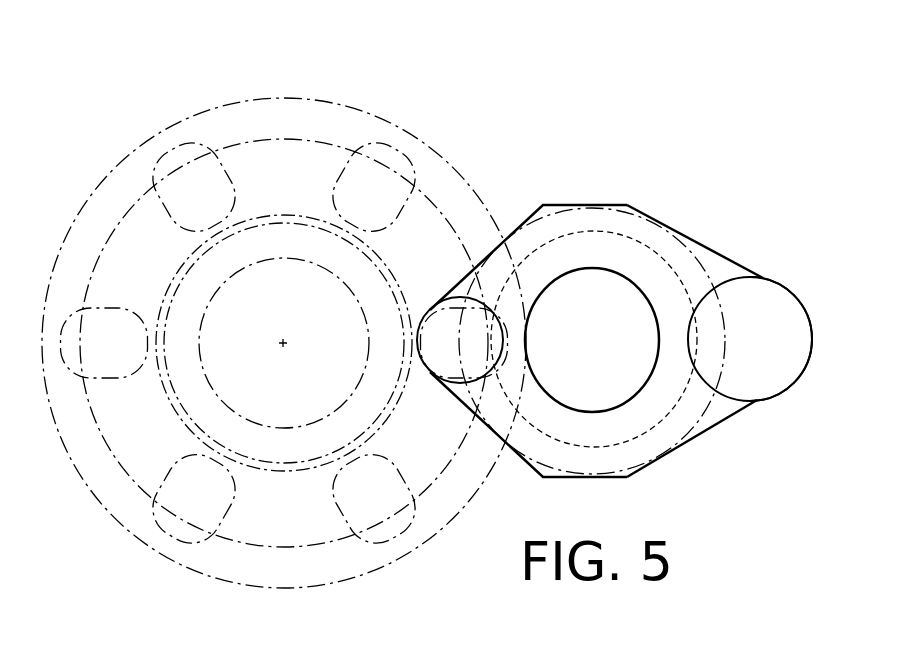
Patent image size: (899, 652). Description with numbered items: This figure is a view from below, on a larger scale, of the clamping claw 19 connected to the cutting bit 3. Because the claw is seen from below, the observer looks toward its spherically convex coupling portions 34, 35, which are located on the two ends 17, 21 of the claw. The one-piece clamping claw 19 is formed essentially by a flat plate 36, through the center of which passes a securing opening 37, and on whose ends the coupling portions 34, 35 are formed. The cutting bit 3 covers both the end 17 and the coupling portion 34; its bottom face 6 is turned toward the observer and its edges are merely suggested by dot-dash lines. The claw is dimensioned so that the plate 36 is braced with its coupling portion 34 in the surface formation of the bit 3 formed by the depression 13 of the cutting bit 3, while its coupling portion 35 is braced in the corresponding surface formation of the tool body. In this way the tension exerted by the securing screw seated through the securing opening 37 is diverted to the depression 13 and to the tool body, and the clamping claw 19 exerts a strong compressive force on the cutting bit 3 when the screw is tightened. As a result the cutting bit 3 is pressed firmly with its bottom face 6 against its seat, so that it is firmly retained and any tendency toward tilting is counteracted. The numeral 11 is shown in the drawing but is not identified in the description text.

The cutting bit 3 is at (318, 84).
The bottom face 6 is at (287, 543).
The central hub bore 11 is at (334, 368).
The depression 13 is at (382, 148).
The end 17 is at (520, 227).
The clamping claw 19 is at (557, 205).
The end 21 is at (760, 276).
The coupling portion 34 is at (450, 362).
The coupling portion 35 is at (788, 358).
The flat plate 36 is at (710, 236).
The securing opening 37 is at (612, 347).